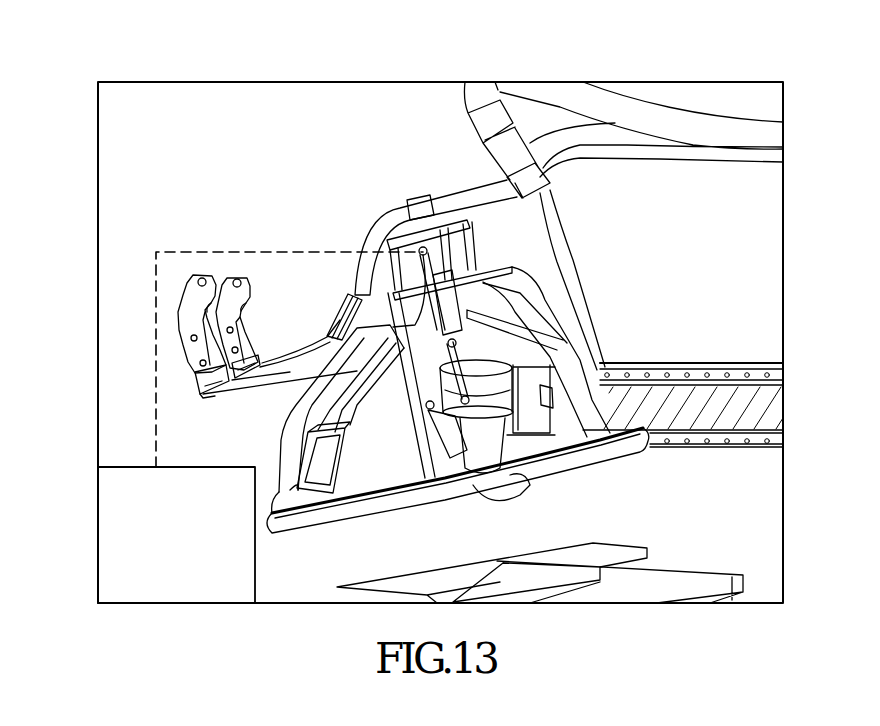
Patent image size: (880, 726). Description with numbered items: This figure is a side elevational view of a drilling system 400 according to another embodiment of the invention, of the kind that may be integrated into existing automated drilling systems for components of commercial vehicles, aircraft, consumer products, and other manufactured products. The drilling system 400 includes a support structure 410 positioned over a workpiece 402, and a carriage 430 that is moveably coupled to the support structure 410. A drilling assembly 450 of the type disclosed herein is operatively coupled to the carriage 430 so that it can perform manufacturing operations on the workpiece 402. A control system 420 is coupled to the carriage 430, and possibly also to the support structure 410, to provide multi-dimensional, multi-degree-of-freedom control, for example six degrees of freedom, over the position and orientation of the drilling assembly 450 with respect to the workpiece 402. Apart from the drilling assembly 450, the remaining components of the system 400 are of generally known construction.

The drilling system 400 is at (181, 76).
The workpiece 402 is at (502, 573).
The support structure 410 is at (700, 413).
The control system 420 is at (128, 466).
The carriage 430 is at (597, 342).
The drilling assembly 450 is at (482, 447).